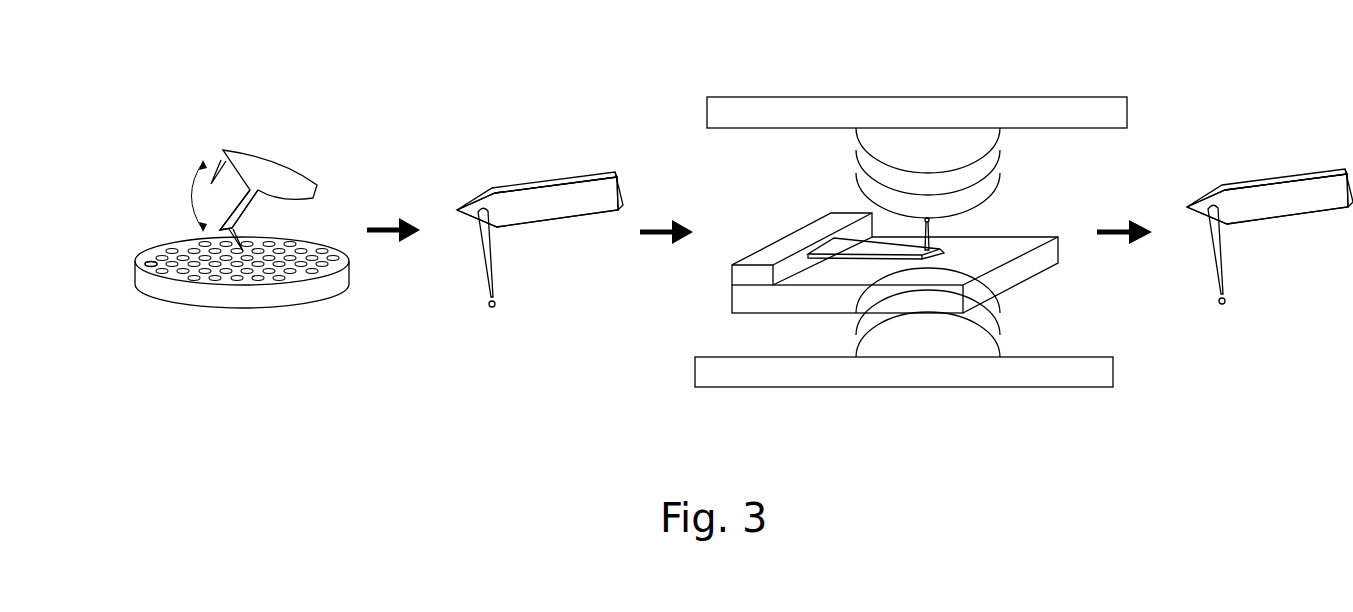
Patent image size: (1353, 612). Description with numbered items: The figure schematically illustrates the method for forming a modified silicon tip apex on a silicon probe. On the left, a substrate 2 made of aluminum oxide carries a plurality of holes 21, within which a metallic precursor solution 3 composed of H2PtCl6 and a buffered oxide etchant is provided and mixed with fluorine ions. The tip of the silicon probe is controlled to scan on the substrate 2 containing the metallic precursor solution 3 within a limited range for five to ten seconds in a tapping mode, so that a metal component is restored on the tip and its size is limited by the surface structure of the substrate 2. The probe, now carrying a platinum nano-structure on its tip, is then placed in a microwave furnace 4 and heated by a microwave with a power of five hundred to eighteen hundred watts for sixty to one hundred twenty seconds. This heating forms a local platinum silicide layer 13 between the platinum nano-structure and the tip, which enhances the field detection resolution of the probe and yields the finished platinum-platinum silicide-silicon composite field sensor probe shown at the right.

The local platinum silicide layer 13 is at (1279, 292).
The substrate 2 is at (135, 278).
The holes 21 is at (172, 247).
The metallic precursor solution 3 is at (152, 262).
The microwave furnace 4 is at (946, 96).